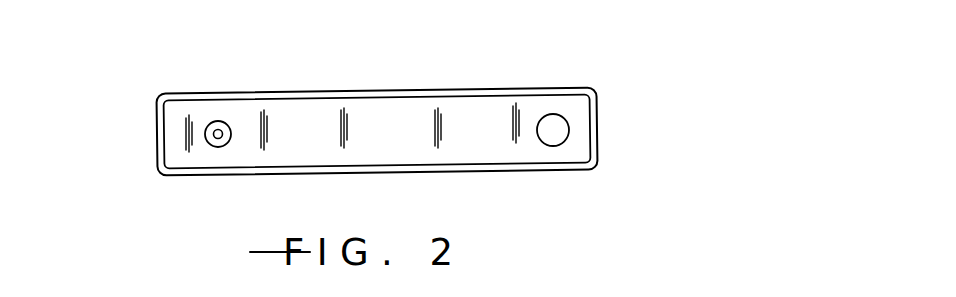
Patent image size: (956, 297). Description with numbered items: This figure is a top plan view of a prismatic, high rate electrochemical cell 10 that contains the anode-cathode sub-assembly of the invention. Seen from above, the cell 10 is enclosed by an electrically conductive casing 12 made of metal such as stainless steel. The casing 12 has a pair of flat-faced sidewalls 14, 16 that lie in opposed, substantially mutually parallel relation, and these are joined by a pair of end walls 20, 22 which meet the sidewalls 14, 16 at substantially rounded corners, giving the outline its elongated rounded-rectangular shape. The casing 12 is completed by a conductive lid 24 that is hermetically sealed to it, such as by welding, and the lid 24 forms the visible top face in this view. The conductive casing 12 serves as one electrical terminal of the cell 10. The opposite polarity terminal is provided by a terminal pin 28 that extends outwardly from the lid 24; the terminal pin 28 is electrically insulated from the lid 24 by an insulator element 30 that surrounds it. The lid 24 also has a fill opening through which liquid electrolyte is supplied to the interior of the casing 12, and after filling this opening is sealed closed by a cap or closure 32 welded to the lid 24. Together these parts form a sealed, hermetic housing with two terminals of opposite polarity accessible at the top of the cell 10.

The electrochemical cell 10 is at (140, 92).
The casing 12 is at (541, 176).
The sidewall 14 is at (358, 176).
The sidewall 16 is at (373, 90).
The end wall 20 is at (157, 140).
The end wall 22 is at (597, 125).
The lid 24 is at (303, 122).
The terminal pin 28 is at (218, 134).
The insulator element 30 is at (218, 134).
The closure 32 is at (552, 127).